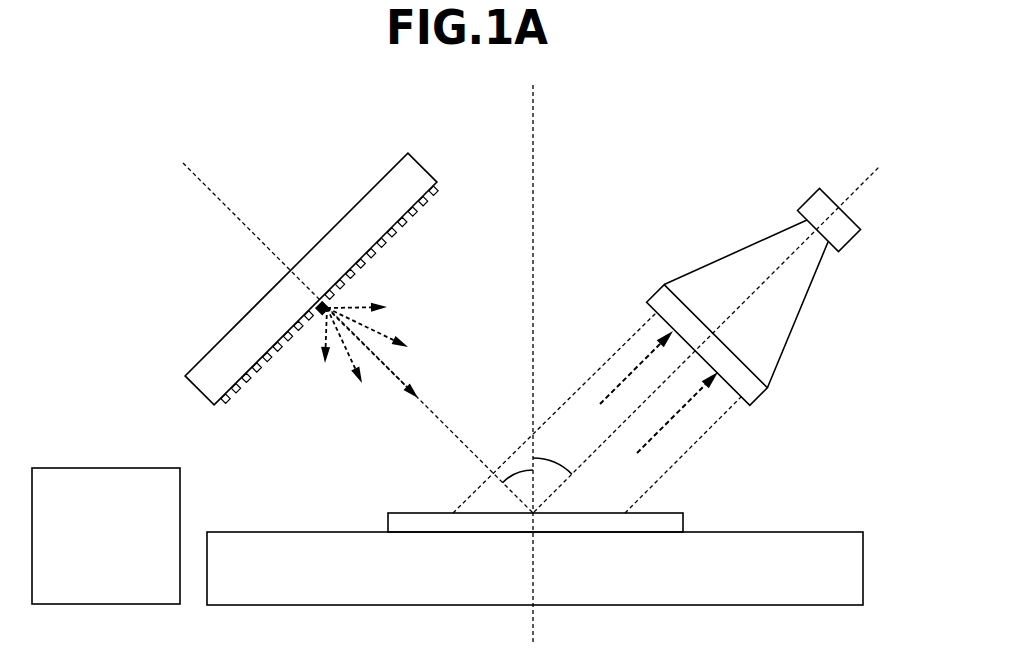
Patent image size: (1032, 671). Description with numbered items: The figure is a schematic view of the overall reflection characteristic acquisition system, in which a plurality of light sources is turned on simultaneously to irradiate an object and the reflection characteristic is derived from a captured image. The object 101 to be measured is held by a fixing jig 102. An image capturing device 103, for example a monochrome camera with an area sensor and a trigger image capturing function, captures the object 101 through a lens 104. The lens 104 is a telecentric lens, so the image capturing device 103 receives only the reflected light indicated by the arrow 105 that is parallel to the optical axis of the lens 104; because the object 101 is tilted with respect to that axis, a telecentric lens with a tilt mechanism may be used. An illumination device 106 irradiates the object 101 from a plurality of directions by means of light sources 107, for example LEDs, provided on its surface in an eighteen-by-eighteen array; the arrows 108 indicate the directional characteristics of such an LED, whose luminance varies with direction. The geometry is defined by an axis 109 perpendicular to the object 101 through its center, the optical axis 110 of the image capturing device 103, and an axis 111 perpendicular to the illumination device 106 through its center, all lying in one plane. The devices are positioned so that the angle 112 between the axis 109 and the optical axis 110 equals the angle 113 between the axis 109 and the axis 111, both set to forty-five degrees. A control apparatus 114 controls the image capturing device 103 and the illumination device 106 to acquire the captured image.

The object 101 is at (670, 513).
The fixing jig 102 is at (815, 531).
The image capturing device 103 is at (814, 193).
The lens 104 is at (730, 254).
The arrow 105 is at (625, 380).
The illumination device 106 is at (367, 192).
The light sources 107 is at (397, 233).
The arrows 108 is at (347, 357).
The axis 109 is at (535, 125).
The optical axis 110 is at (862, 188).
The axis 111 is at (213, 193).
The angle 112 is at (577, 437).
The angle 113 is at (520, 470).
The control apparatus 114 is at (110, 467).